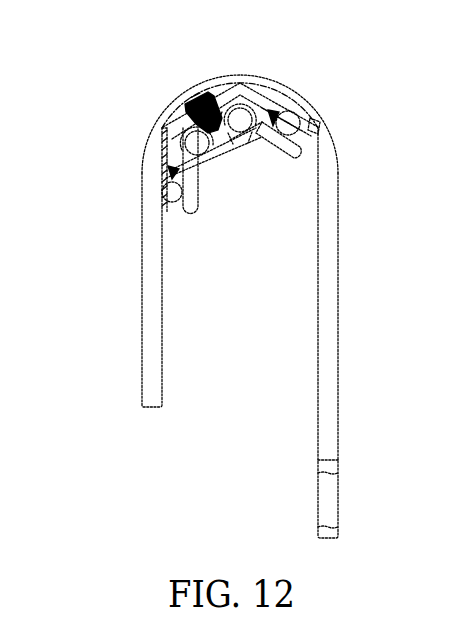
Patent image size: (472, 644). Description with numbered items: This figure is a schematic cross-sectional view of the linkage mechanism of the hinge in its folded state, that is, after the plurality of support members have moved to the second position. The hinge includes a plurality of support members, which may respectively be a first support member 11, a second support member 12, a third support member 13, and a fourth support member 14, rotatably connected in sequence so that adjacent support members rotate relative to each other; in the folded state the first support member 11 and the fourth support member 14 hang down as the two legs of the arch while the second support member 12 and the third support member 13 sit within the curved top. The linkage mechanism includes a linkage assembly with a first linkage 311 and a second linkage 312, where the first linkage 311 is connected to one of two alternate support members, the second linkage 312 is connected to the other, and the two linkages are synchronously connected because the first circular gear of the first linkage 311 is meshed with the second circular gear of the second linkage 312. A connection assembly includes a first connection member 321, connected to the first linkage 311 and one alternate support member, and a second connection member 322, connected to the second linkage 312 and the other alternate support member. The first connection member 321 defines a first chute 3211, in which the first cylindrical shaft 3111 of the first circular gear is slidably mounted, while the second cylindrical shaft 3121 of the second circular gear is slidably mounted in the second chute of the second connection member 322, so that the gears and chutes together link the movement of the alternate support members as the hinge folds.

The first support member 11 is at (153, 315).
The second support member 12 is at (181, 86).
The third support member 13 is at (283, 102).
The fourth support member 14 is at (320, 303).
The first linkage 311 is at (162, 125).
The second linkage 312 is at (247, 147).
The first connection member 321 is at (188, 212).
The second connection member 322 is at (296, 158).
The first cylindrical shaft 3111 is at (170, 192).
The second cylindrical shaft 3121 is at (319, 123).
The first chute 3211 is at (272, 103).